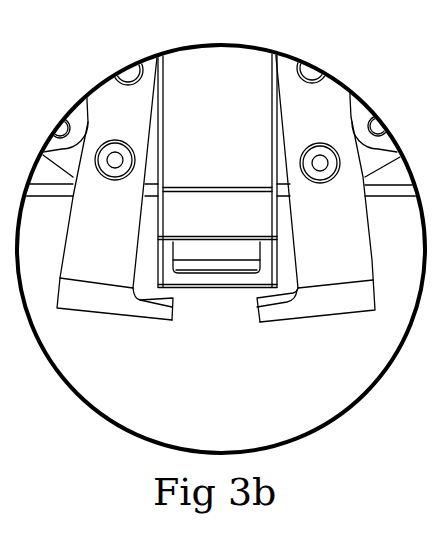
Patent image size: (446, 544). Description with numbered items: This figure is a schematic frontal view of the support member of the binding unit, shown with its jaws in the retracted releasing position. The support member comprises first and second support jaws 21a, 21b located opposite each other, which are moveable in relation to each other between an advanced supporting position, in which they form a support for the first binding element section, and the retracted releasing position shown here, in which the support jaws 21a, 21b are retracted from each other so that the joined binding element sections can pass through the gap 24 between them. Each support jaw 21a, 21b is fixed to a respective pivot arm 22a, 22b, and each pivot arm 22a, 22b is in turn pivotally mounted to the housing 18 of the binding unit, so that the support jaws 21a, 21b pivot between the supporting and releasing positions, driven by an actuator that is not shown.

The housing 18 is at (390, 193).
The pivot arm 22a is at (98, 262).
The pivot arm 22b is at (328, 270).
The first support jaw 21a is at (152, 312).
The second support jaw 21b is at (277, 313).
The gap 24 is at (214, 318).